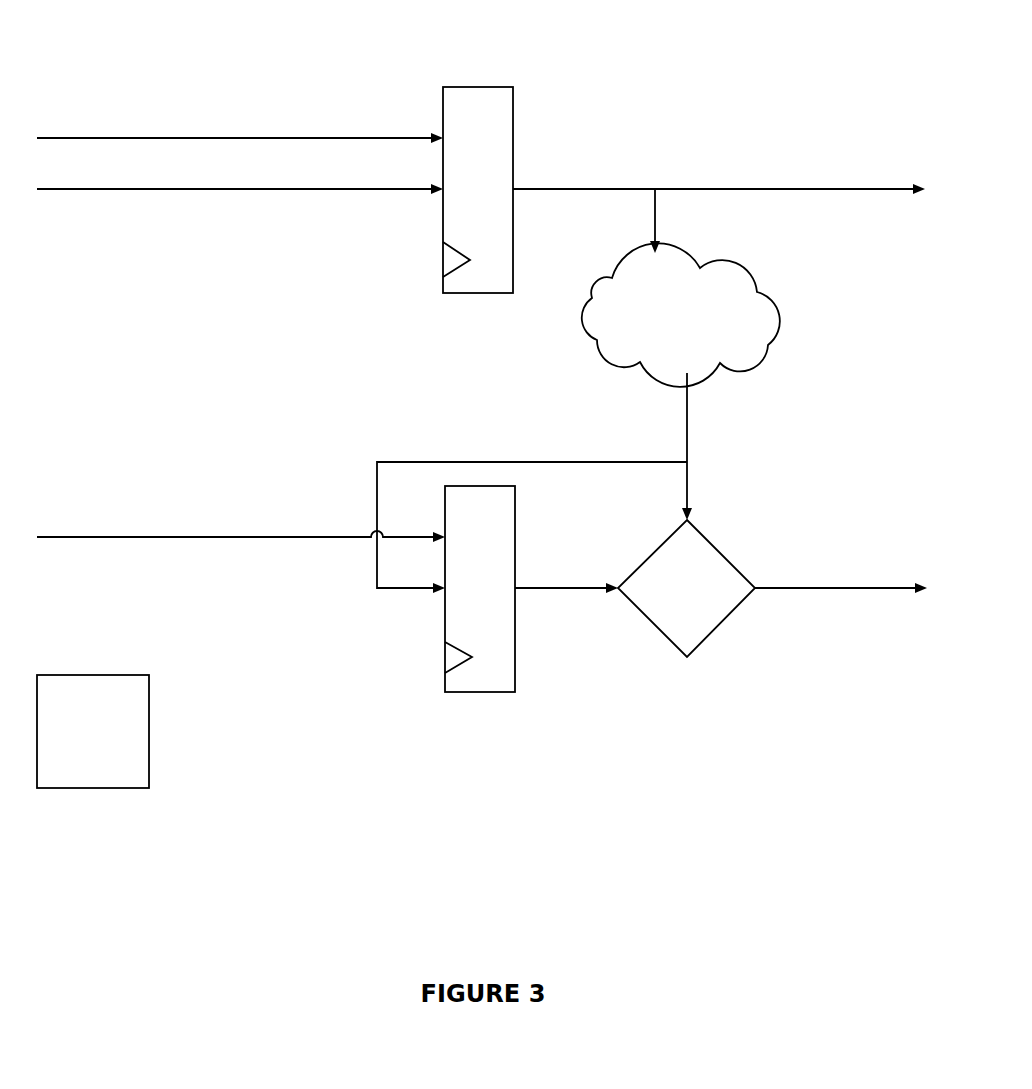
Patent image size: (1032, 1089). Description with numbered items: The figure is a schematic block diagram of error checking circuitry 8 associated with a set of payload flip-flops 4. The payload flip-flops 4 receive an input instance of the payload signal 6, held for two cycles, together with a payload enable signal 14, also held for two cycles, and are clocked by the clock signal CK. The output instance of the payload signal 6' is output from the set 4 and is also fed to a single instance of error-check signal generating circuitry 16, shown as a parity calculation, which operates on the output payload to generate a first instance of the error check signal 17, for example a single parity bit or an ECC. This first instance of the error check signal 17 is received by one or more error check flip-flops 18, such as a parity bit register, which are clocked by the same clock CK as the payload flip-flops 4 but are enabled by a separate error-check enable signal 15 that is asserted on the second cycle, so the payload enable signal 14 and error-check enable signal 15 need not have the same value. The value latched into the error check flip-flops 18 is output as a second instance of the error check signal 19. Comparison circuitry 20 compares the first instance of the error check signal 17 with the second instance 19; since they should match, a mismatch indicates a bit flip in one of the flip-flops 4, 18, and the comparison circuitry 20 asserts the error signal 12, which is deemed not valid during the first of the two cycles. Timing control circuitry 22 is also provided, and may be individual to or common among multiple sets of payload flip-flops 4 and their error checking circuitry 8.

The set of payload flip-flops 4 is at (488, 87).
The payload enable signal 14 is at (382, 138).
The payload signal 6 is at (231, 215).
The output instance of the payload signal 6' is at (719, 179).
The error-check signal generating circuitry 16 is at (772, 320).
The first instance of the error check signal 17 is at (687, 420).
The error-check enable signal 15 is at (185, 537).
The error check flip-flops 18 is at (483, 692).
The second instance of the error check signal 19 is at (573, 582).
The comparison circuitry 20 is at (687, 657).
The error signal 12 is at (810, 590).
The timing control circuitry 22 is at (149, 728).
The error check circuitry 8 is at (473, 491).